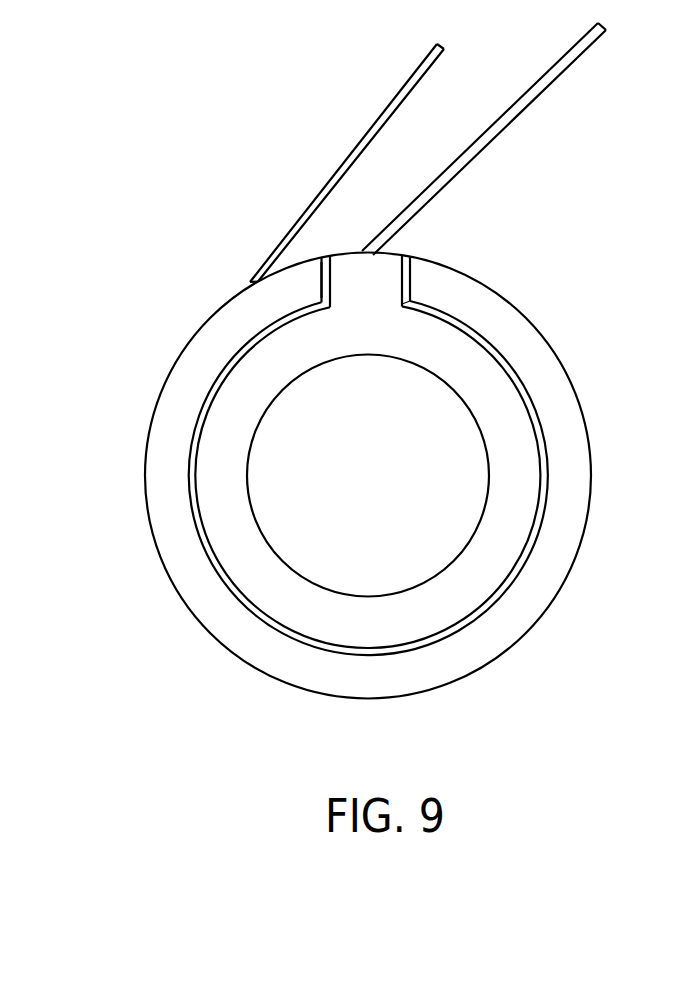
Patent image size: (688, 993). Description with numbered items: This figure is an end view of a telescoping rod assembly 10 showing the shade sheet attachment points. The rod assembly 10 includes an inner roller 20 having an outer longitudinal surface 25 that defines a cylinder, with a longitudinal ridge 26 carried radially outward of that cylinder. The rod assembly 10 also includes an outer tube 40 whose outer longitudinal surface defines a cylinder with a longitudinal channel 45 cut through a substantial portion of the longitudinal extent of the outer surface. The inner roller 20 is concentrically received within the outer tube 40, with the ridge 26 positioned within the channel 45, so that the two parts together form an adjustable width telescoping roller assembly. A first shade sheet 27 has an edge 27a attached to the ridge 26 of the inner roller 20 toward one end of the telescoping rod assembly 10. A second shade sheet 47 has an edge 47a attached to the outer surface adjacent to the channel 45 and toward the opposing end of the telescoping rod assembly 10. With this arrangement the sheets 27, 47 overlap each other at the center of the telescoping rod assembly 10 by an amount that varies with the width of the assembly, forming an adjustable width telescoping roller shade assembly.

The telescoping rod assembly 10 is at (202, 139).
The inner roller 20 is at (517, 495).
The outer longitudinal surface 25 is at (537, 405).
The longitudinal ridge 26 is at (404, 281).
The first shade sheet 27 is at (513, 149).
The edge 27a is at (385, 252).
The outer tube 40 is at (129, 393).
The longitudinal channel 45 is at (321, 283).
The second shade sheet 47 is at (364, 102).
The edge 47a is at (250, 282).